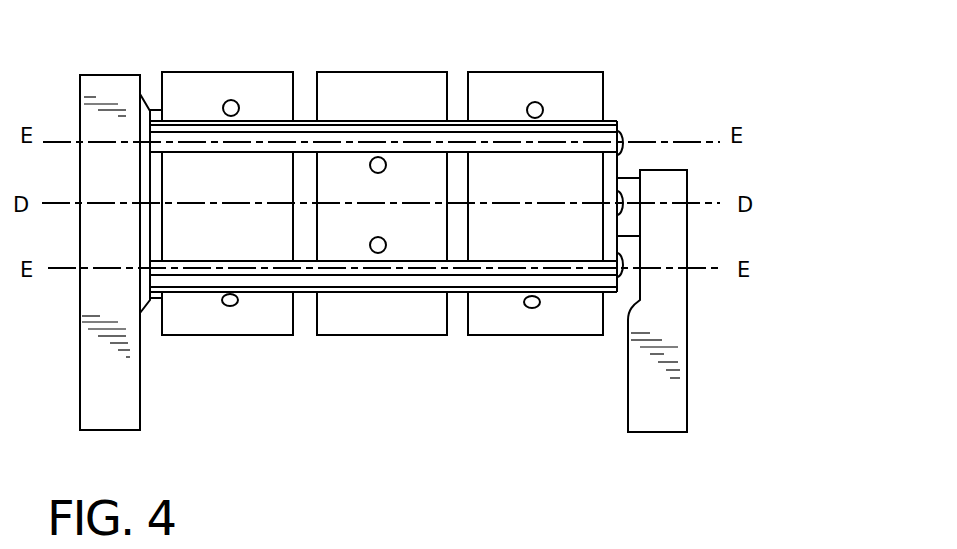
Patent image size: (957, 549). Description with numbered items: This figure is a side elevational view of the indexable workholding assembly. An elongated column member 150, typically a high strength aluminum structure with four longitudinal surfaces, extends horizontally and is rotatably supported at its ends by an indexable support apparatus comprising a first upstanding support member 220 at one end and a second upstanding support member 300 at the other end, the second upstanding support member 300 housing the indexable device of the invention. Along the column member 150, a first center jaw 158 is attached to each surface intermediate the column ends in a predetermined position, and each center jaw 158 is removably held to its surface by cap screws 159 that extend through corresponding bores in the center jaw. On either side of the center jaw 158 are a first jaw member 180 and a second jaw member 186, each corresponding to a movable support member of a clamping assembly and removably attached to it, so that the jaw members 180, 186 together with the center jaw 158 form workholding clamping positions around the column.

The column member 150 is at (493, 57).
The first center jaw 158 is at (400, 105).
The cap screws 159 is at (384, 171).
The first jaw member 180 is at (218, 103).
The second jaw member 186 is at (595, 108).
The first upstanding support member 220 is at (655, 407).
The second upstanding support member 300 is at (123, 422).